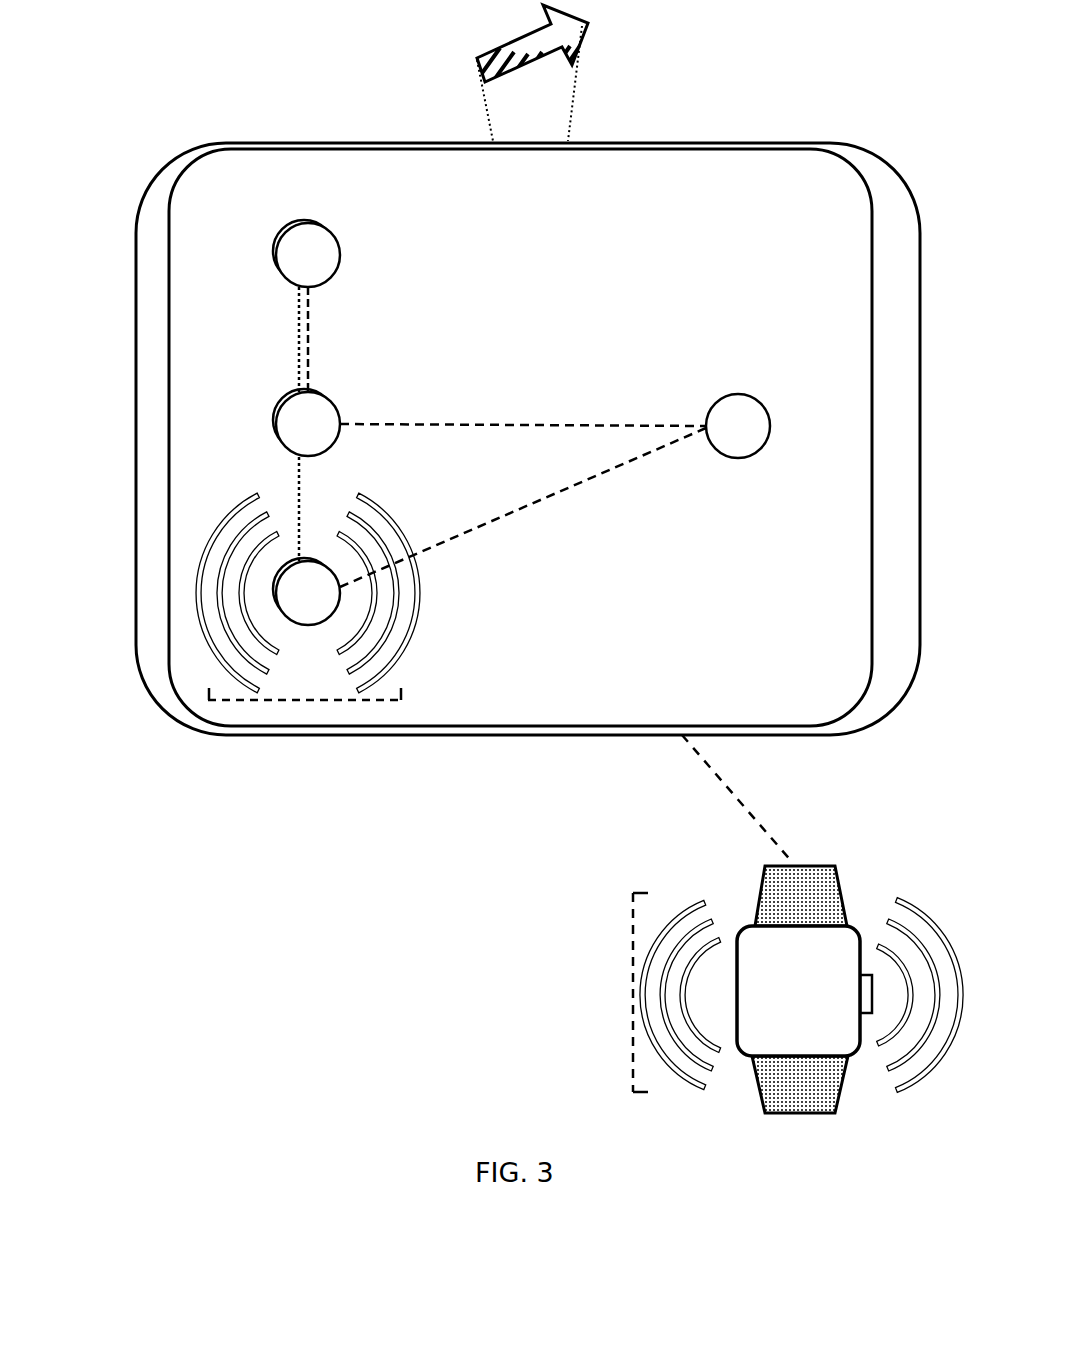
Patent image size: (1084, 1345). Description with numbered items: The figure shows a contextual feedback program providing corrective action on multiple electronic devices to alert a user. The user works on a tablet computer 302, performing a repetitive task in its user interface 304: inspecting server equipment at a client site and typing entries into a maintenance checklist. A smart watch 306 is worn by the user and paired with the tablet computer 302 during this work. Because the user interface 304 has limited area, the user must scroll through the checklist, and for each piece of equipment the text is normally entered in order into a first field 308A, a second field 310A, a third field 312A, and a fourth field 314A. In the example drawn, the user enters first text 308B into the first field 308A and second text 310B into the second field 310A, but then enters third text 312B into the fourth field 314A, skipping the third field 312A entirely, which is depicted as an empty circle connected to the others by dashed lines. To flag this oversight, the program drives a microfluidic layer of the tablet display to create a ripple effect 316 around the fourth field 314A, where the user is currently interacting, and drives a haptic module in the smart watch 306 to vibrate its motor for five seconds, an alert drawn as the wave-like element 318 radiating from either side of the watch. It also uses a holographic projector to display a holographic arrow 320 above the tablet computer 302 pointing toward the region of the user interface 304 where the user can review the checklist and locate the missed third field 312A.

The tablet computer 302 is at (905, 187).
The user interface 304 is at (845, 156).
The smart watch 306 is at (818, 1006).
The first field 308A is at (280, 230).
The first text 308B is at (275, 256).
The second field 310A is at (282, 398).
The second text 310B is at (275, 424).
The third field 312A is at (712, 403).
The third text 312B is at (272, 592).
The fourth field 314A is at (284, 563).
The ripple effect 316 is at (303, 701).
The audio output from wearable device 318 is at (631, 1005).
The holographic arrow 320 is at (573, 107).